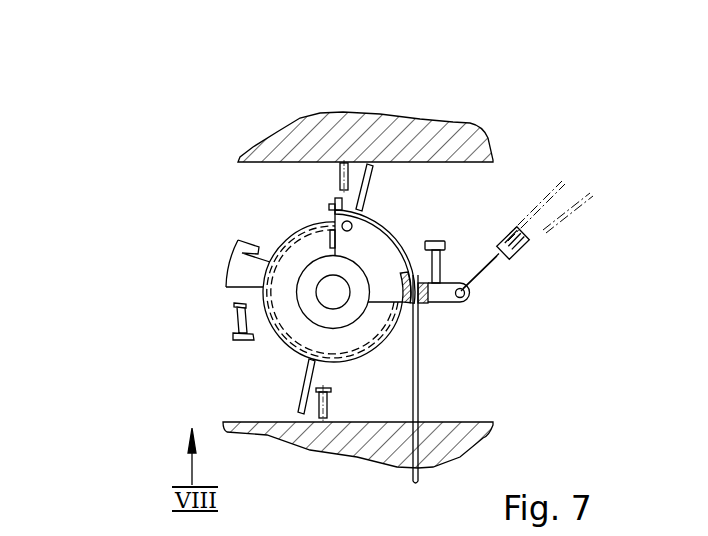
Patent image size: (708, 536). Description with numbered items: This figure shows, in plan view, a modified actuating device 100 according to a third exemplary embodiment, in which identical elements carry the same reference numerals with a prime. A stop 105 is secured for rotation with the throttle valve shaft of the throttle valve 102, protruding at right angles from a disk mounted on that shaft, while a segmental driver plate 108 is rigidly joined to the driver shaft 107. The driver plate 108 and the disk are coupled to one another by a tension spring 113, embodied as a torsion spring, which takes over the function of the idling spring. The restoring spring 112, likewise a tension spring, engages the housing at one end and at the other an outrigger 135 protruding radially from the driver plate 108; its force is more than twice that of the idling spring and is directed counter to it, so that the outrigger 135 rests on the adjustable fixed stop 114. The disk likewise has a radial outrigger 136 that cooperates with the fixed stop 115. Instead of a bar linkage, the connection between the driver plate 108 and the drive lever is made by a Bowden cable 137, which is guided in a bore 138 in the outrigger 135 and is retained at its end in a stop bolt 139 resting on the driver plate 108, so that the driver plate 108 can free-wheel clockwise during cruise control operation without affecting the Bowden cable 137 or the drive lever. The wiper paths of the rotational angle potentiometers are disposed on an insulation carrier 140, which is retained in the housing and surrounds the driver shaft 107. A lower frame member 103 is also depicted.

The actuating device 100 is at (507, 150).
The throttle valve 102 is at (362, 198).
The lower frame member 103 is at (263, 421).
The stop 105 is at (333, 228).
The driver shaft 107 is at (330, 292).
The driver plate 108 is at (401, 233).
The restoring spring 112 is at (540, 222).
The tension spring 113 is at (287, 340).
The adjustable fixed stop 114 is at (445, 250).
The fixed stop 115 is at (233, 317).
The outrigger 135 is at (443, 293).
The radial outrigger 136 is at (243, 267).
The Bowden cable 137 is at (417, 367).
The bore 138 is at (420, 303).
The stop bolt 139 is at (332, 207).
The insulation carrier 140 is at (340, 342).